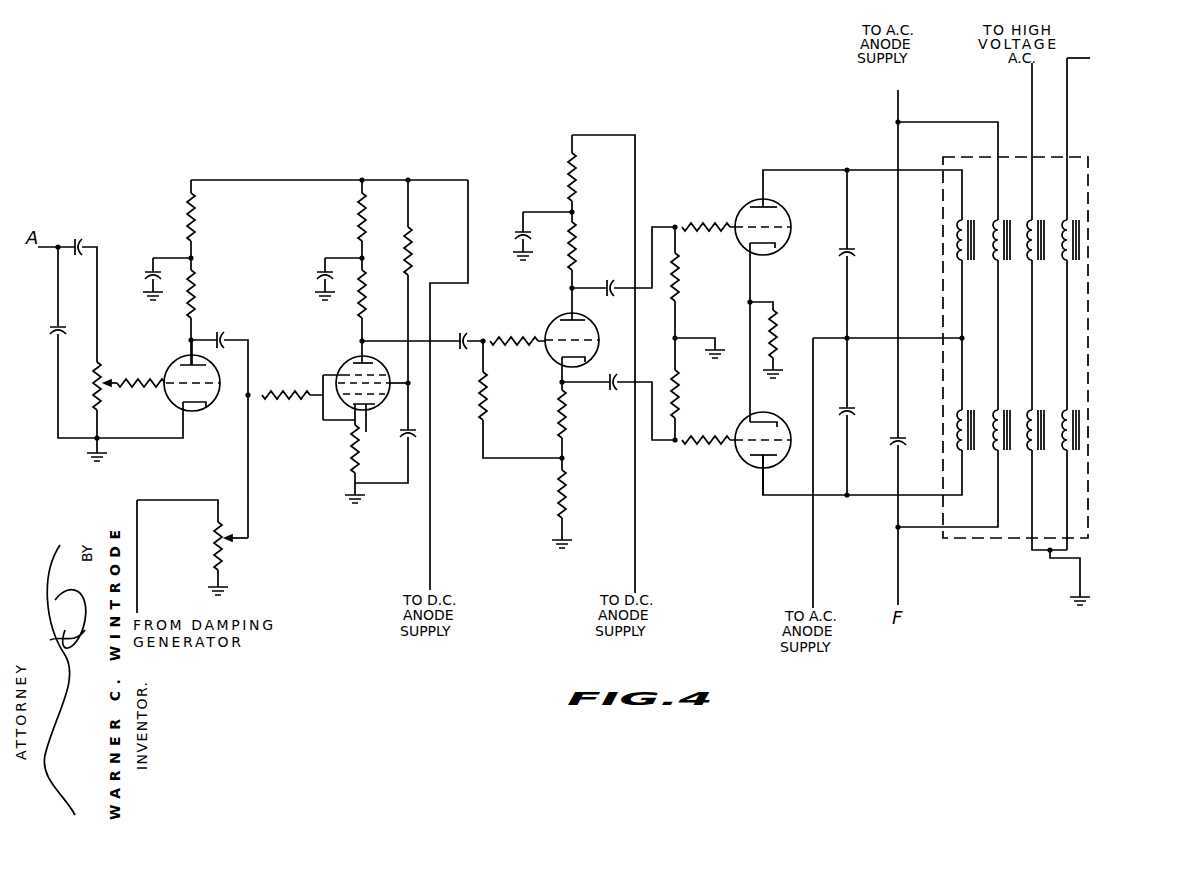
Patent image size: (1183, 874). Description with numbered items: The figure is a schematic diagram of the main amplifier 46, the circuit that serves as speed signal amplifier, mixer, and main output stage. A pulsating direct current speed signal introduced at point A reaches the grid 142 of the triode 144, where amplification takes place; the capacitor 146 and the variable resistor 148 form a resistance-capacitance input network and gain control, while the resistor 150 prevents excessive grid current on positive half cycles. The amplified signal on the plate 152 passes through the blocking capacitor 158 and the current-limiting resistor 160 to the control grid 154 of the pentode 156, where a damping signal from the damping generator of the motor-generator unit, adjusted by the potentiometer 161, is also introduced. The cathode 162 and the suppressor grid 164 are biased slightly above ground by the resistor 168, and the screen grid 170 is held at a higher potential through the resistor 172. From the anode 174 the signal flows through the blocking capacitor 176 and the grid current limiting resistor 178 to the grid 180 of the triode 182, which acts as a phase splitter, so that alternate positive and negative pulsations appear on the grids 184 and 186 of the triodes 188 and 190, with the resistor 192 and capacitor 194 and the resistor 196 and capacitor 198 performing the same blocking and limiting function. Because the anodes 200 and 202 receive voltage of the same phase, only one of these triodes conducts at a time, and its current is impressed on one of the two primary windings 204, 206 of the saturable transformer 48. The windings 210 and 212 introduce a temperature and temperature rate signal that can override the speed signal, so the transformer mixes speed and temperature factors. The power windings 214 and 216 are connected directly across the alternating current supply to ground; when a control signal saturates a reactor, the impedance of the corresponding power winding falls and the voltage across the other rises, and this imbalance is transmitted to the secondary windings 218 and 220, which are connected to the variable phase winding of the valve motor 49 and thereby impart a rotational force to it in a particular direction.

The main amplifier 46 is at (510, 148).
The saturable transformer 48 is at (1010, 540).
The valve motor 49 is at (1117, 55).
The grid 142 is at (183, 393).
The triode 144 is at (218, 398).
The capacitor 146 is at (85, 243).
The resistor 148 is at (97, 378).
The resistor 150 is at (134, 396).
The plate 152 is at (190, 363).
The control grid 154 is at (385, 394).
The pentode 156 is at (362, 343).
The capacitor 158 is at (227, 342).
The resistor 160 is at (290, 402).
The potentiometer 161 is at (232, 562).
The cathode 162 is at (384, 428).
The suppressor grid 164 is at (343, 373).
The resistor 168 is at (352, 458).
The screen grid 170 is at (390, 383).
The resistor 172 is at (413, 250).
The anode 174 is at (355, 363).
The blocking capacitor 176 is at (462, 350).
The grid current limiting resistor 178 is at (524, 318).
The grid 180 is at (585, 340).
The triode 182 is at (552, 362).
The grid 184 is at (782, 228).
The grid 186 is at (778, 438).
The triode 188 is at (783, 246).
The triode 190 is at (789, 462).
The resistor 192 is at (692, 228).
The capacitor 194 is at (606, 290).
The resistor 196 is at (710, 452).
The capacitor 198 is at (612, 390).
The anode 200 is at (775, 207).
The anode 202 is at (757, 470).
The primary winding 204 is at (958, 240).
The primary winding 206 is at (958, 424).
The winding 210 is at (996, 250).
The winding 212 is at (996, 445).
The winding 214 is at (1030, 250).
The winding 216 is at (1030, 445).
The winding 218 is at (1065, 250).
The winding 220 is at (1065, 445).